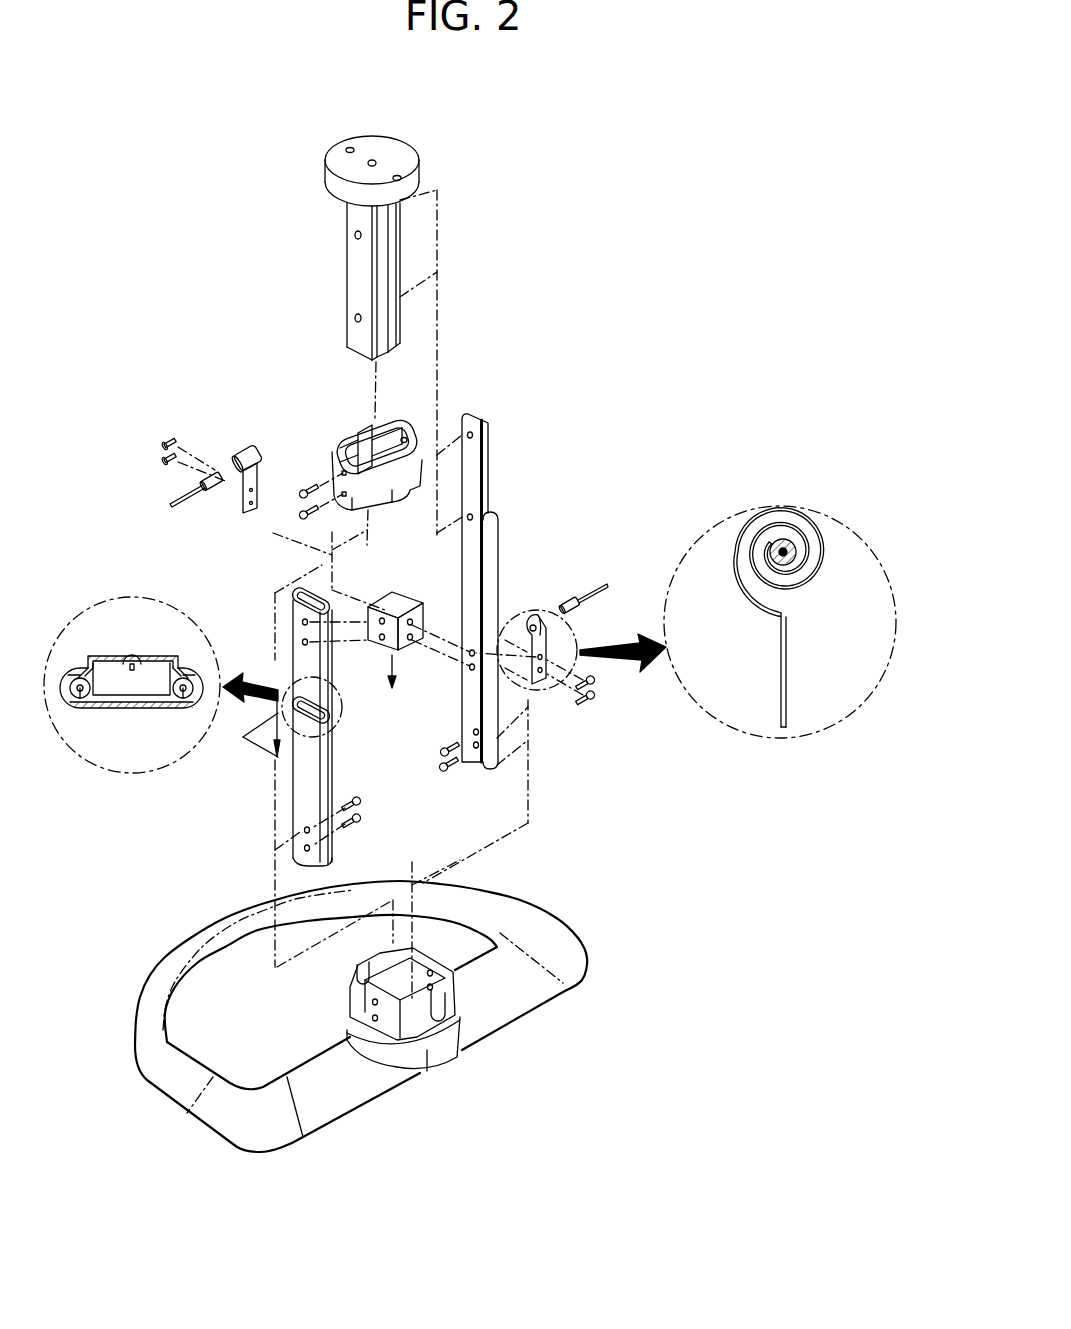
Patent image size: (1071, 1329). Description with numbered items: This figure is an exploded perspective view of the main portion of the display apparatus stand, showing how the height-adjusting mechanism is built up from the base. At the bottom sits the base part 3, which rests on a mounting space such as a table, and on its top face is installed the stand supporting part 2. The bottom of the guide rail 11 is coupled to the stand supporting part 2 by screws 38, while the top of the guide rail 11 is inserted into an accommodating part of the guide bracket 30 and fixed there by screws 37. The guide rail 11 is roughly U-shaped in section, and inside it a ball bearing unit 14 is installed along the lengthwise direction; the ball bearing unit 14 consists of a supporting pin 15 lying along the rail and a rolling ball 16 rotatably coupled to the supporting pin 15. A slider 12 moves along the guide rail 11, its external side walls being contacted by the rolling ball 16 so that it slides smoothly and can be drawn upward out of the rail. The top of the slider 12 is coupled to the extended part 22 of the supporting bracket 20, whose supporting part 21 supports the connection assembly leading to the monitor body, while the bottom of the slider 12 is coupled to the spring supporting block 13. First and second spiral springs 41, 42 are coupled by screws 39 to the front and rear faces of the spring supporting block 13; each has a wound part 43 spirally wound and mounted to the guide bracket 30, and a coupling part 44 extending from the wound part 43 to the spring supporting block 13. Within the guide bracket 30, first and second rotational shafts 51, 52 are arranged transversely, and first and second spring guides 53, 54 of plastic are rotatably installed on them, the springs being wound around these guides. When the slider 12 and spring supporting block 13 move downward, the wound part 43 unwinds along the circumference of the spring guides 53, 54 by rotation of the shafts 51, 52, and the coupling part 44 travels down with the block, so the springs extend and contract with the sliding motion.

The stand supporting part 2 is at (452, 964).
The base part 3 is at (577, 965).
The guide rail 11 is at (496, 540).
The slider 12 is at (488, 457).
The spring supporting block 13 is at (394, 590).
The ball bearing unit 14 is at (160, 723).
The supporting pin 15 is at (108, 703).
The rolling ball 16 is at (72, 694).
The supporting bracket 20 is at (435, 248).
The supporting part 21 is at (418, 170).
The extended part 22 is at (395, 236).
The guide bracket 30 is at (397, 430).
The screws 37 is at (300, 500).
The screws 38 is at (360, 800).
The screws 39 is at (600, 686).
The first spiral spring 41 is at (555, 555).
The second spiral spring 42 is at (866, 604).
The wound part 43 is at (252, 450).
The coupling part 44 is at (257, 485).
The first rotational shaft 51 is at (178, 506).
The second rotational shaft 52 is at (607, 589).
The first spring guide 53 is at (212, 491).
The second spring guide 54 is at (573, 598).